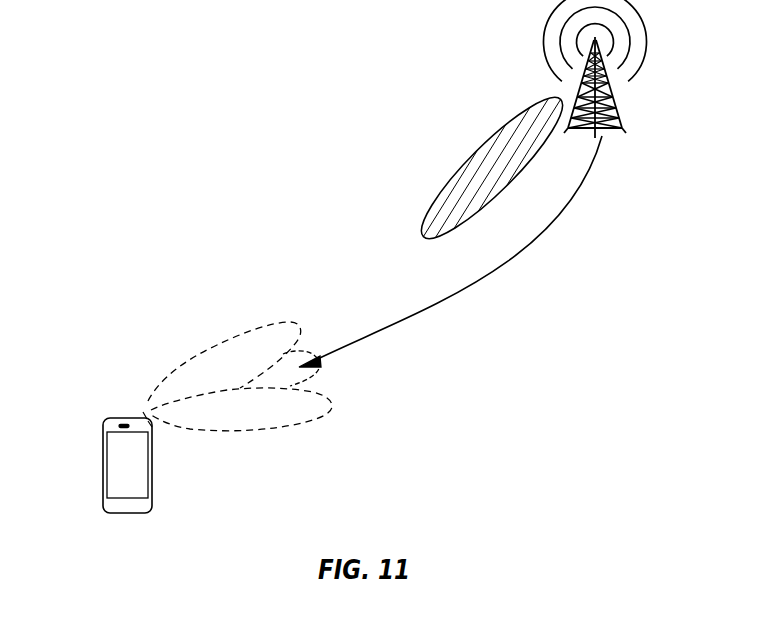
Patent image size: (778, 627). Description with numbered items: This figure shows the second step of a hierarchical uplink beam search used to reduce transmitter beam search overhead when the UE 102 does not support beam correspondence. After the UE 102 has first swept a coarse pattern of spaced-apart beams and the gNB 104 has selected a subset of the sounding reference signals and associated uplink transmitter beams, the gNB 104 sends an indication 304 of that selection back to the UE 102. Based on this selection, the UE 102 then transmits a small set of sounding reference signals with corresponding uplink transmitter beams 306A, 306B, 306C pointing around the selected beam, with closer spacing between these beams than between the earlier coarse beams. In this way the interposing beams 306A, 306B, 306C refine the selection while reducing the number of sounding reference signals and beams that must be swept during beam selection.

The UE 102 is at (103, 470).
The gNB 104 is at (616, 112).
The indication 304 is at (503, 266).
The uplink transmitter beam 306A is at (298, 319).
The uplink transmitter beam 306B is at (318, 372).
The uplink transmitter beam 306C is at (330, 408).